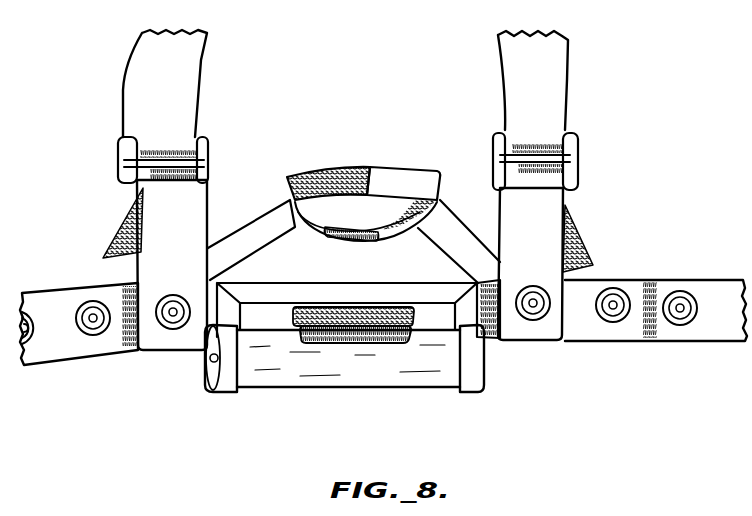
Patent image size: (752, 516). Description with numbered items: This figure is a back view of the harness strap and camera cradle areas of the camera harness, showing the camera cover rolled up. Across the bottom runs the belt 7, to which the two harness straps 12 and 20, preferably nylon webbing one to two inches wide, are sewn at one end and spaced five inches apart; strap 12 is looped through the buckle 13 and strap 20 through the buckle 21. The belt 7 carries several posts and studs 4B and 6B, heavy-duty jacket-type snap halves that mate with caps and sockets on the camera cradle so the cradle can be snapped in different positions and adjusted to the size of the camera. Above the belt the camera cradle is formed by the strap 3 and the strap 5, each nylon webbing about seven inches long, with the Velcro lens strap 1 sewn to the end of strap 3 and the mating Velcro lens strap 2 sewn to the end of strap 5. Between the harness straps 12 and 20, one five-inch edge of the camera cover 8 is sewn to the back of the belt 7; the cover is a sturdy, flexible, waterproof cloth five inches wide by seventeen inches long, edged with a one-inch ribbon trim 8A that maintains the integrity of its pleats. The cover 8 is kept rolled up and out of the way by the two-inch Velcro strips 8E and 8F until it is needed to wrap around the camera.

The lens strap 1 is at (397, 181).
The lens strap 2 is at (334, 184).
The strap 3 is at (452, 226).
The strap 5 is at (268, 231).
The belt 7 is at (42, 347).
The posts and studs 4B is at (680, 318).
The posts and studs 6B is at (37, 330).
The camera cover 8 is at (323, 373).
The ribbon trim 8A is at (421, 298).
The Velcro strip 8E is at (382, 343).
The Velcro strip 8F is at (356, 305).
The harness strap 12 is at (180, 78).
The buckle 13 is at (208, 165).
The harness strap 20 is at (525, 78).
The buckle 21 is at (576, 163).